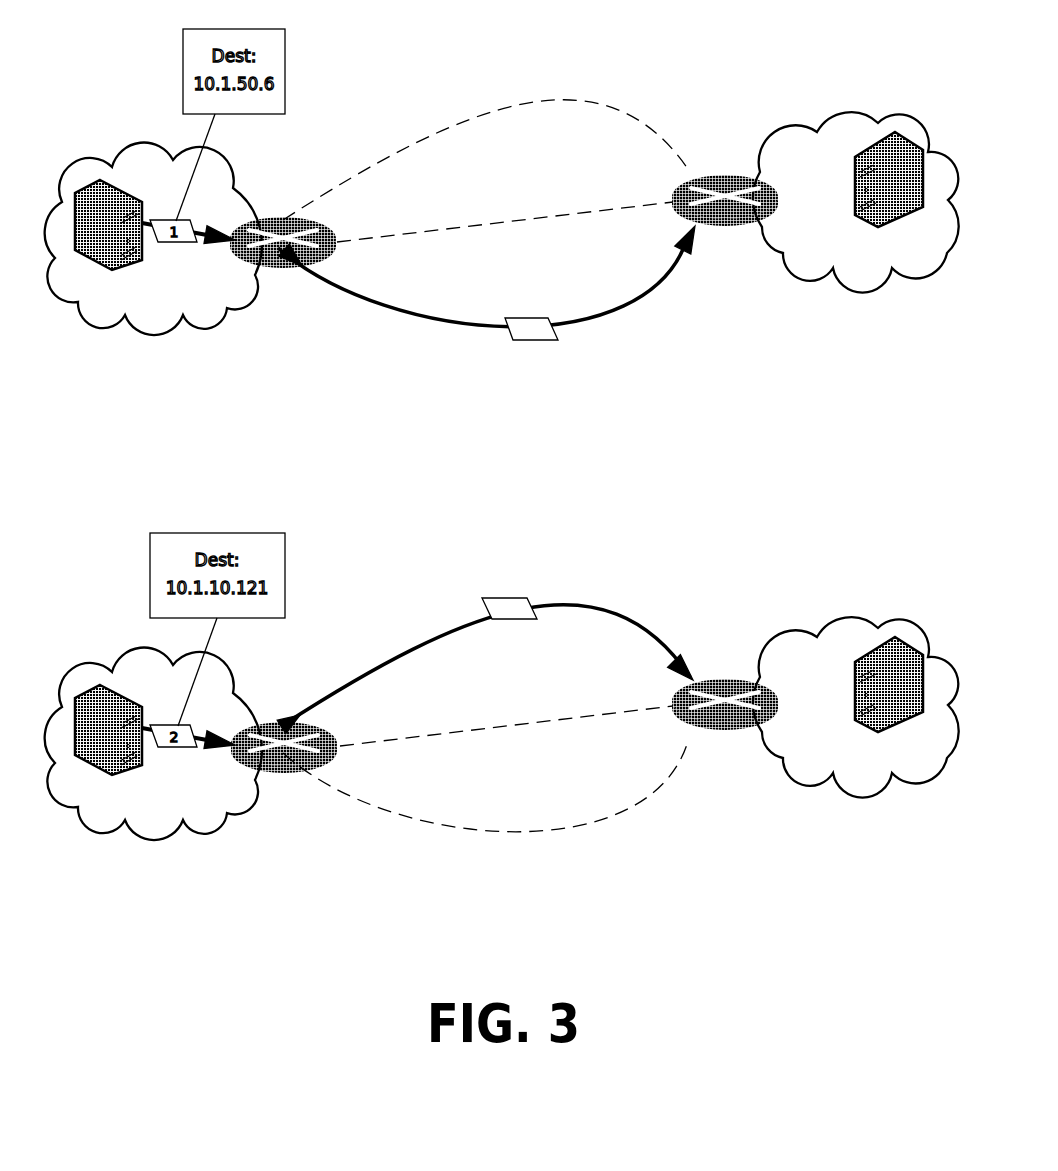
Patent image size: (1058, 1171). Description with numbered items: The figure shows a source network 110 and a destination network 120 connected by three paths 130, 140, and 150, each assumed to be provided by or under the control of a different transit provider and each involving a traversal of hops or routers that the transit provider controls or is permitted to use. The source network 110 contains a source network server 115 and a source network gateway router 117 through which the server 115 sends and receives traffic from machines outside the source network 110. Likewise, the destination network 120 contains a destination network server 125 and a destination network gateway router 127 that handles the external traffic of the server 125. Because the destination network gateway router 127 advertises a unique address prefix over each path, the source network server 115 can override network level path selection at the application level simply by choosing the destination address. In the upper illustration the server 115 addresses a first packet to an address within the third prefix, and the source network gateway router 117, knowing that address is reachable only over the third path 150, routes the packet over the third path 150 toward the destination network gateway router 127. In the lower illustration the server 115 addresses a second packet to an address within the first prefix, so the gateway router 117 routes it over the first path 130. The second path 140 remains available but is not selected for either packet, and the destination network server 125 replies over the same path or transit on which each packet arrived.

The source network 110 is at (153, 337).
The source network server 115 is at (94, 304).
The source network gateway router 117 is at (271, 303).
The destination network 120 is at (860, 110).
The destination network server 125 is at (876, 258).
The destination network gateway router 127 is at (711, 258).
The first path 130 is at (407, 146).
The second path 140 is at (448, 230).
The third path 150 is at (420, 315).